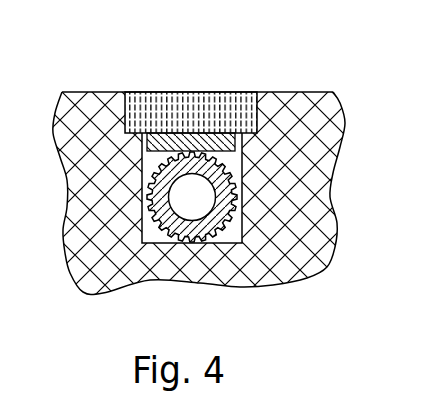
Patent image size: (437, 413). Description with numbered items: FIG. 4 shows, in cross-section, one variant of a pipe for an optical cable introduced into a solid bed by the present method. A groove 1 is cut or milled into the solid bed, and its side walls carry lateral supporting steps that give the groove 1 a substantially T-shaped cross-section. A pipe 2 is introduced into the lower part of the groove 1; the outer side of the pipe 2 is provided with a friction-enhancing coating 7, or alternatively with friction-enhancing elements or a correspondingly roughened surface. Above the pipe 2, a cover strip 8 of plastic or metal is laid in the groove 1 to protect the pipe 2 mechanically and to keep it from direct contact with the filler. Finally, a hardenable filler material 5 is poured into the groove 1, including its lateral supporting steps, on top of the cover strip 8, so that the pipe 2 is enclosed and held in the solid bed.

The groove 1 is at (197, 53).
The hardenable filler material 5 is at (210, 123).
The cover strip 8 is at (163, 138).
The pipe 2 is at (220, 182).
The friction-enhancing coating 7 is at (153, 244).